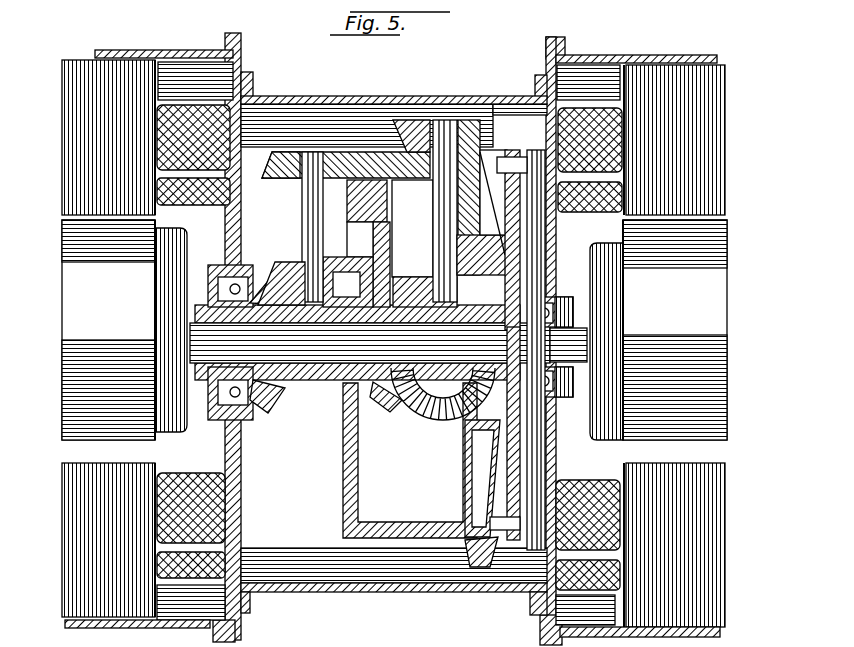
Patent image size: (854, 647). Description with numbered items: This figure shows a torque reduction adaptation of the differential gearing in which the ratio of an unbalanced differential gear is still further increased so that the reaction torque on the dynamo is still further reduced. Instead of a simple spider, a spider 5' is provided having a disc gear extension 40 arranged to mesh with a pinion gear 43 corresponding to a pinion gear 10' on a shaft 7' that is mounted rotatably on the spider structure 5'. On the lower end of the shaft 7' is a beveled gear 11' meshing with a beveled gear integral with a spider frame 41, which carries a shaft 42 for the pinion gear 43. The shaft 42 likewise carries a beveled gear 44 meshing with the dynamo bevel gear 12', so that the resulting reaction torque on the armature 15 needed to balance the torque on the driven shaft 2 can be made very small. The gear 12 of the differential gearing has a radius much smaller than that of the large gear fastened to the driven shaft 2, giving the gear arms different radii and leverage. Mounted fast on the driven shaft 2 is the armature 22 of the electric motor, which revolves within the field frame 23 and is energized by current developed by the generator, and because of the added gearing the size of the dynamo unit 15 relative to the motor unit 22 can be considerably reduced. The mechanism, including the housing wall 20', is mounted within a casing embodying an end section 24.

The driven shaft 2 is at (567, 340).
The spider 5' is at (521, 335).
The shaft 7' is at (427, 211).
The pinion gear 10' is at (394, 103).
The beveled gear 11' is at (424, 243).
The gear 12 is at (432, 401).
The dynamo bevel gear 12' is at (282, 400).
The armature 15 is at (124, 330).
The housing bottom wall 20' is at (394, 585).
The armature 22 is at (658, 330).
The field frame 23 is at (728, 181).
The end section 24 is at (147, 124).
The disc gear extension 40 is at (370, 160).
The spider frame 41 is at (375, 230).
The shaft 42 is at (302, 223).
The pinion gear 43 is at (263, 175).
The beveled gear 44 is at (280, 277).